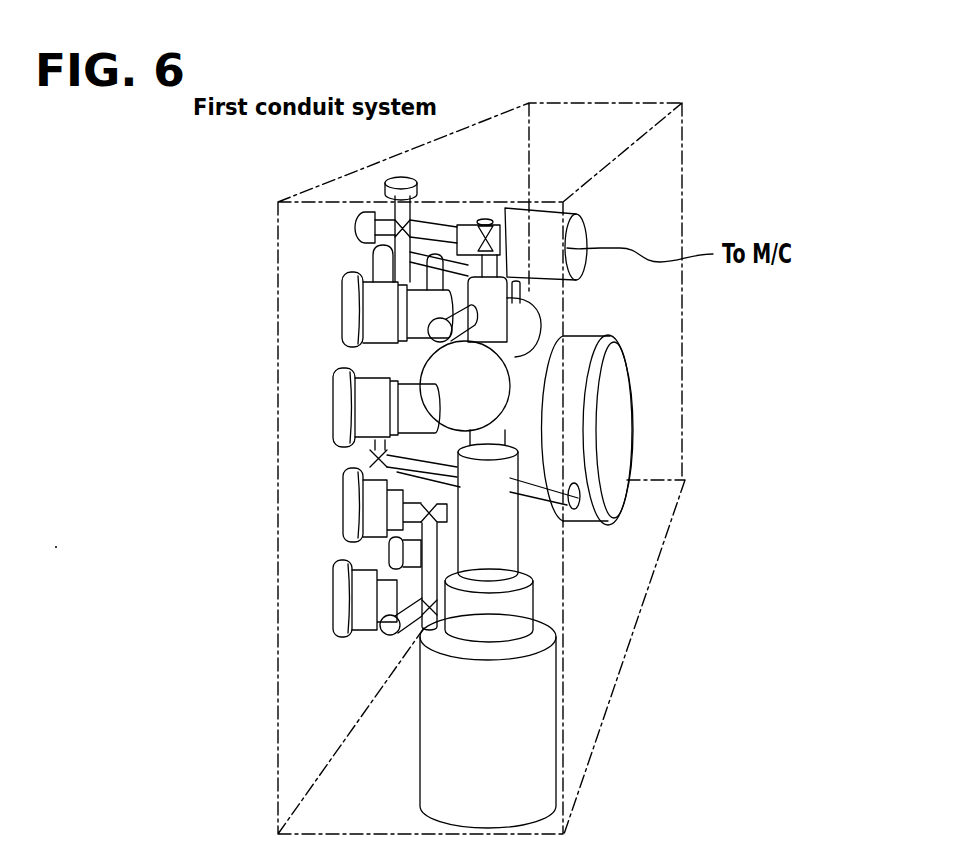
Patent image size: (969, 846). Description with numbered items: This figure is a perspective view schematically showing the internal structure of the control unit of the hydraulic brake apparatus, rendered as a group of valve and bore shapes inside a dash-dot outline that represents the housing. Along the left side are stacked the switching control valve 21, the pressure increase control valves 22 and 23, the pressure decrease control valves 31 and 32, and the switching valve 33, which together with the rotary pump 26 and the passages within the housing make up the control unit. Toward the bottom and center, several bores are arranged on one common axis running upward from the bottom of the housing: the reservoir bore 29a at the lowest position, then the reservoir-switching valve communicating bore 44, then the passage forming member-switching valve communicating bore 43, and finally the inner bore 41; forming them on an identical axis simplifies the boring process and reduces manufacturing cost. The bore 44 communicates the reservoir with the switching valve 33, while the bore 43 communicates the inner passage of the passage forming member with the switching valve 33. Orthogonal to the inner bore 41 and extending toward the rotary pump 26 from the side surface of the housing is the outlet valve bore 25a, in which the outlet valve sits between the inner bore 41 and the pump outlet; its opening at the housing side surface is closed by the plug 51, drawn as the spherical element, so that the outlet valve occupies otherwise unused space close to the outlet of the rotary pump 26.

The switching control valve 21 is at (343, 310).
The pressure increase control valve 22 is at (333, 404).
The pressure increase control valve 23 is at (382, 258).
The outlet valve bore 25a is at (535, 323).
The rotary pump 26 is at (567, 414).
The reservoir bore 29a is at (533, 642).
The pressure decrease control valve 31 is at (333, 602).
The pressure decrease control valve 32 is at (380, 554).
The switching valve 33 is at (342, 503).
The inner bore 41 is at (507, 433).
The passage forming member-switching valve communicating bore 43 is at (517, 467).
The reservoir-switching valve communicating bore 44 is at (535, 602).
The plug 51 is at (487, 372).